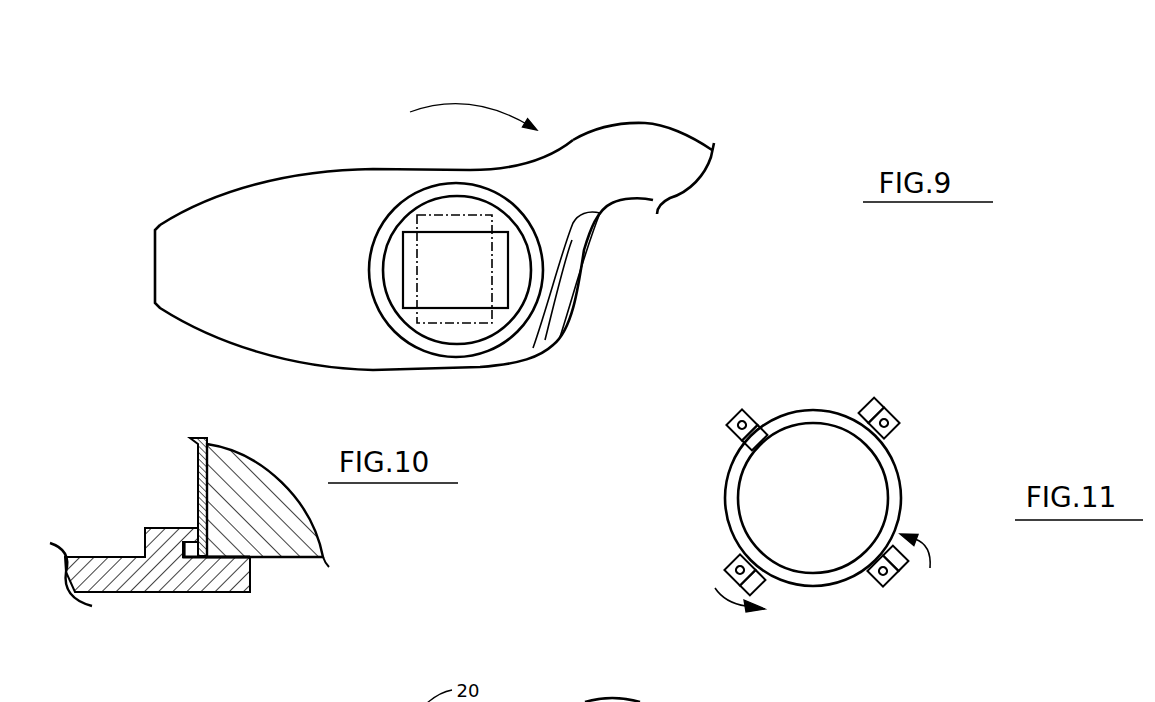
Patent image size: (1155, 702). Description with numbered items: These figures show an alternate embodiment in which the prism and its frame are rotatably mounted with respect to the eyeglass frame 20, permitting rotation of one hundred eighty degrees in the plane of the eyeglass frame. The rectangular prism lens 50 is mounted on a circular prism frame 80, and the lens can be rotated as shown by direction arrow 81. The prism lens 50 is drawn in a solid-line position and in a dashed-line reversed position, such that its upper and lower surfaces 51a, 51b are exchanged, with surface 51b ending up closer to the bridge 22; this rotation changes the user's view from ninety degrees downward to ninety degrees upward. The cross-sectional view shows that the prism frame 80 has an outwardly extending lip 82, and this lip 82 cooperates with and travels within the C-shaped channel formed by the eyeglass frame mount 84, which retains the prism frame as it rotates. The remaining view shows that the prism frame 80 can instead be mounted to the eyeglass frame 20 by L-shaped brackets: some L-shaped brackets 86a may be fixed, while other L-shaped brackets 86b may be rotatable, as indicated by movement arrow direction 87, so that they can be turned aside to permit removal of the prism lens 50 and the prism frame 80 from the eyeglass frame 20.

In FIG. 9, the eyeglass frame 20 is at (283, 177).
In FIG. 10, the eyeglass frame 20 is at (155, 592).
In FIG. 9, the bridge 22 is at (643, 148).
In FIG. 9, the prism lens 50 is at (392, 305).
In FIG. 10, the prism lens 50 is at (318, 505).
In FIG. 9, the upper surface of prism lens 51a is at (442, 228).
In FIG. 9, the lower surface of prism lens 51b is at (440, 313).
In FIG. 9, the prism frame 80 is at (370, 266).
In FIG. 10, the prism frame 80 is at (197, 480).
In FIG. 11, the prism frame 80 is at (822, 410).
In FIG. 9, the direction arrow 81 is at (470, 108).
In FIG. 10, the lip 82 is at (192, 560).
In FIG. 10, the eyeglass frame mount 84 is at (145, 528).
In FIG. 11, the fixed L-shaped bracket 86a is at (897, 415).
In FIG. 11, the movable L-shaped bracket 86b is at (880, 580).
In FIG. 11, the movement arrow direction 87 is at (932, 545).